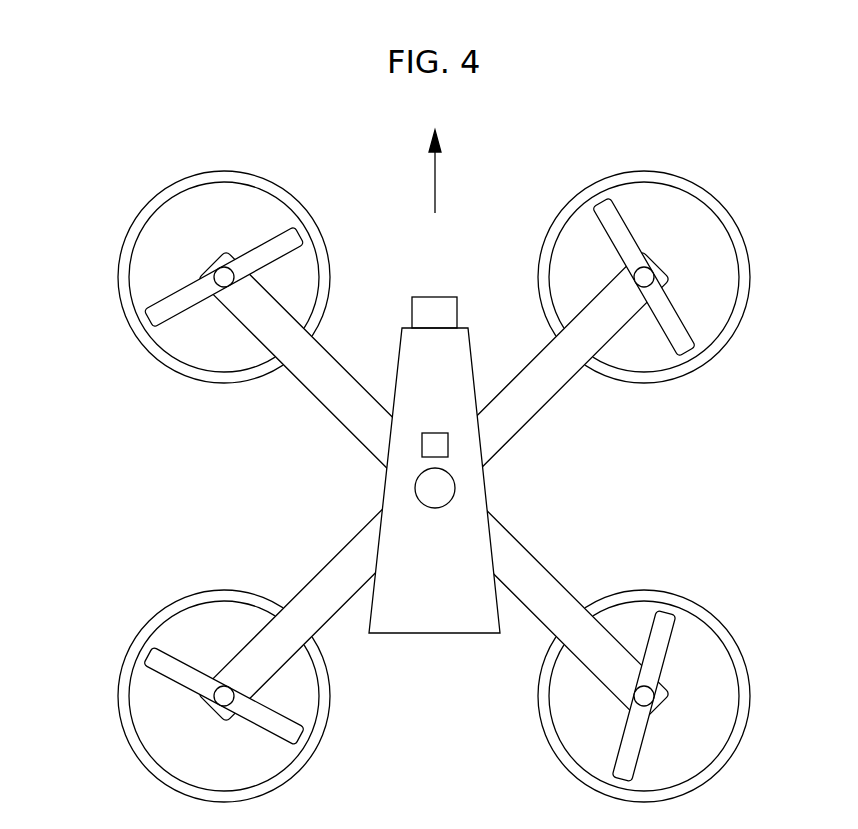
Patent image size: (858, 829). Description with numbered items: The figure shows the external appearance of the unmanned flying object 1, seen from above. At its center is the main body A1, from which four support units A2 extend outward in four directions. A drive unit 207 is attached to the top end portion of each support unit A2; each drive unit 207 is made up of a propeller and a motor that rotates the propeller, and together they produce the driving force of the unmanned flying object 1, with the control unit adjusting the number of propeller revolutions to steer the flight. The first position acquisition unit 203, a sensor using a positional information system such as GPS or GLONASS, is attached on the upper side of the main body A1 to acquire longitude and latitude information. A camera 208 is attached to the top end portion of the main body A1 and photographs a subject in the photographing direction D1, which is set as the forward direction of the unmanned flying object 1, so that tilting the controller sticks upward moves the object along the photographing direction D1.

The unmanned flying object 1 is at (750, 131).
The drive unit 207 is at (148, 243).
The camera 208 is at (412, 312).
The first position acquisition unit 203 is at (447, 442).
The main body A1 is at (433, 617).
The support unit A2 is at (344, 407).
The photographing direction D1 is at (434, 172).